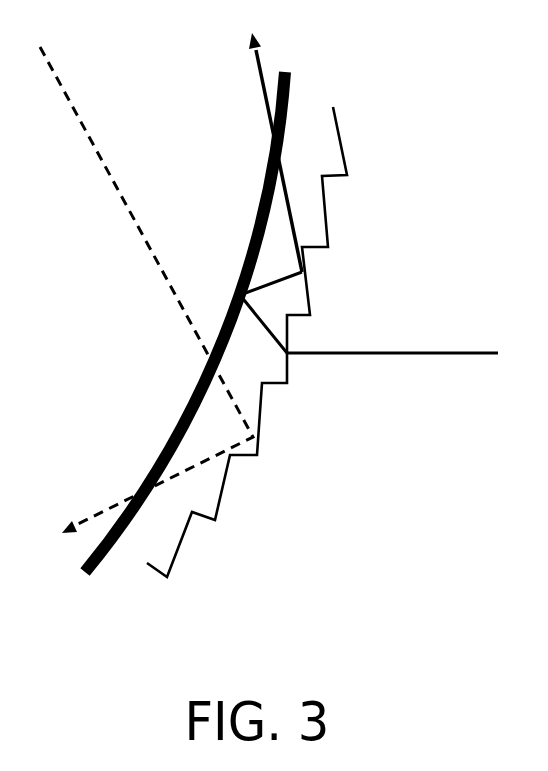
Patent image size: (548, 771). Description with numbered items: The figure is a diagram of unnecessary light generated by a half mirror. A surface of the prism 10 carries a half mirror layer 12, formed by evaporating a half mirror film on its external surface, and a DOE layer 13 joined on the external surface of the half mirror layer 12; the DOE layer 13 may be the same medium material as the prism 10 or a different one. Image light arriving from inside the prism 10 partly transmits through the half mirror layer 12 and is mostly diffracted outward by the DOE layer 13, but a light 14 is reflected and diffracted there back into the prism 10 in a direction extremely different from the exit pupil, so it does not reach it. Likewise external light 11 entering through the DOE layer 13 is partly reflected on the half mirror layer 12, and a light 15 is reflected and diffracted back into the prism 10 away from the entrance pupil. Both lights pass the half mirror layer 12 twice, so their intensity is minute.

The prism 10 is at (172, 147).
The external light 11 is at (360, 348).
The half mirror layer 12 is at (118, 547).
The DOE layer 13 is at (203, 500).
The light 14 is at (90, 522).
The light 15 is at (272, 108).